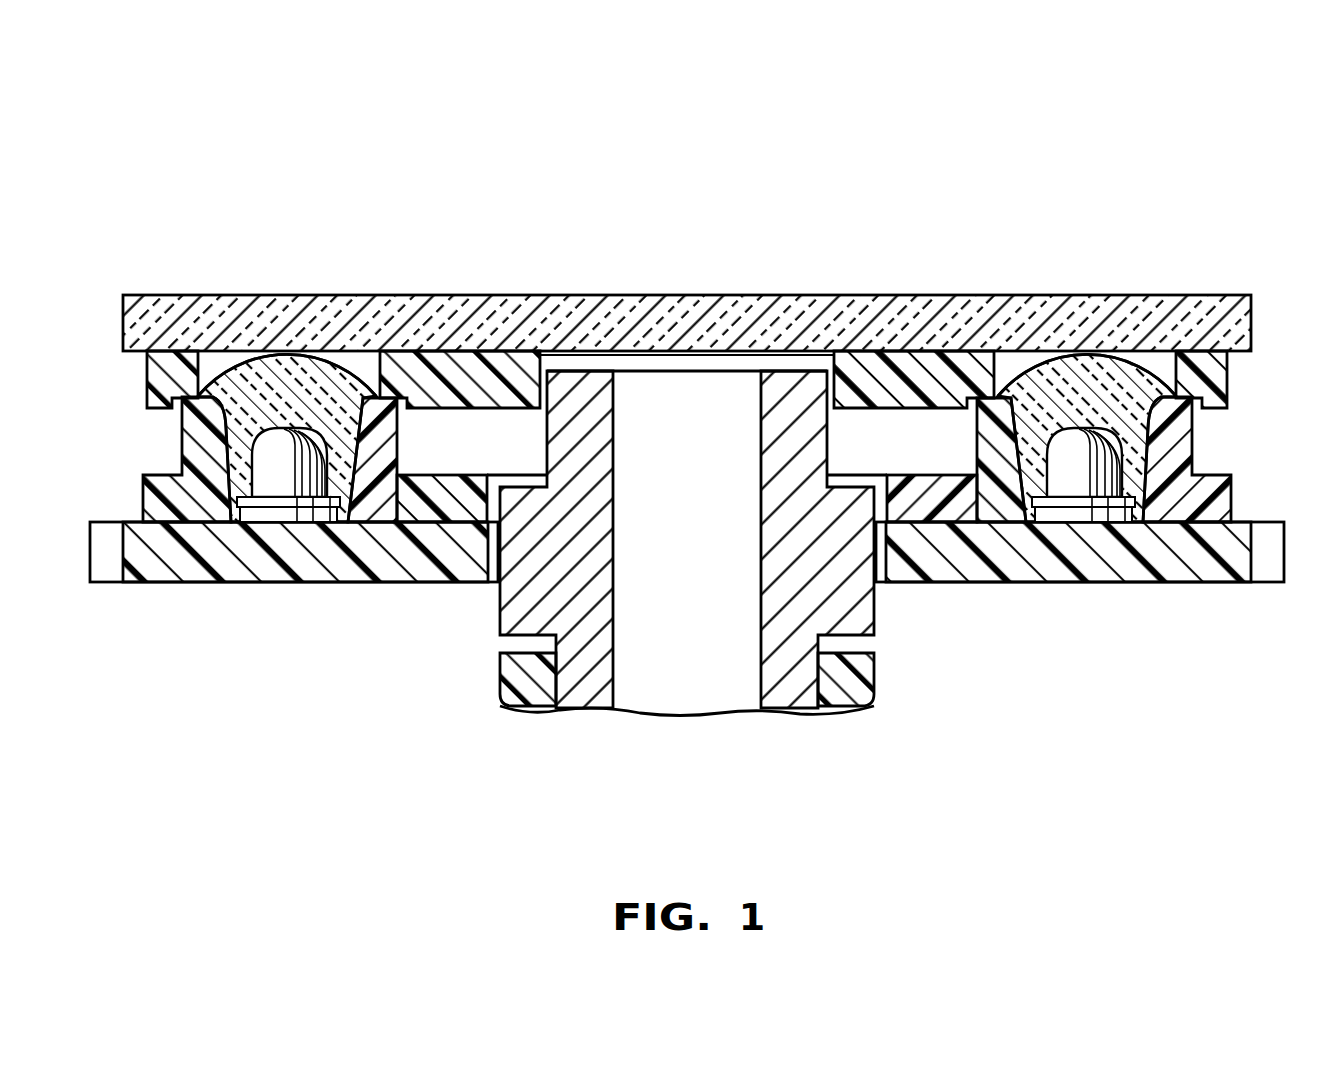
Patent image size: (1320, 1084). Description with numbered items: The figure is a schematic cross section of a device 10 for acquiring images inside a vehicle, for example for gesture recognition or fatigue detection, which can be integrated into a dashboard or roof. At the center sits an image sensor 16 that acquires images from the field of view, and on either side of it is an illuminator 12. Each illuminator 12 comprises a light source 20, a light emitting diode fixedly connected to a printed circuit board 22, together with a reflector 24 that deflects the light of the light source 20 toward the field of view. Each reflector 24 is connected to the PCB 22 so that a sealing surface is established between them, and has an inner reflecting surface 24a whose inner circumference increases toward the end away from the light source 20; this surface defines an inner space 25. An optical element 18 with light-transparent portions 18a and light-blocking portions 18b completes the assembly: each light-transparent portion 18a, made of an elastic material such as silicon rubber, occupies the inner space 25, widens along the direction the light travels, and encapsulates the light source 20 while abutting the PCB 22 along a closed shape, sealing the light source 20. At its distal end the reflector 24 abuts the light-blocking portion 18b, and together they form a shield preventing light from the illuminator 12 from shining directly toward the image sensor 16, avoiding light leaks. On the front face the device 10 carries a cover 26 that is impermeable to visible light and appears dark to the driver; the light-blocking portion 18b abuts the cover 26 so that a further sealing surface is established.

The device 10 is at (1260, 175).
The illuminator 12 is at (258, 570).
The image sensor 16 is at (672, 662).
The optical element 18 is at (687, 407).
The light-transparent portion 18a is at (297, 403).
The light-blocking portion 18b is at (448, 370).
The light source 20 is at (290, 490).
The printed circuit board 22 is at (388, 562).
The reflector 24 is at (364, 408).
The inner reflecting surface 24a is at (228, 432).
The inner space 25 is at (262, 403).
The cover 26 is at (748, 312).